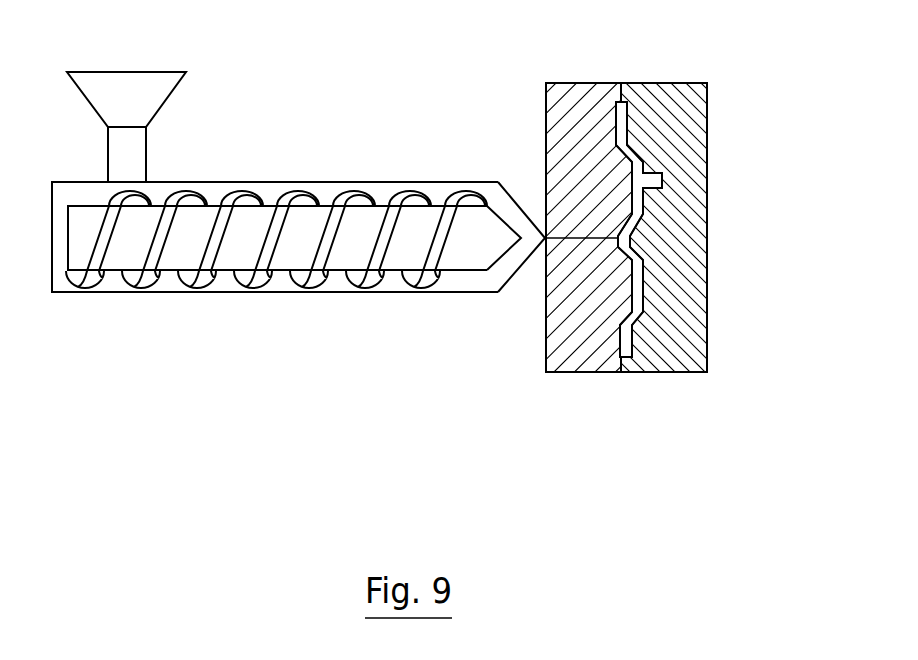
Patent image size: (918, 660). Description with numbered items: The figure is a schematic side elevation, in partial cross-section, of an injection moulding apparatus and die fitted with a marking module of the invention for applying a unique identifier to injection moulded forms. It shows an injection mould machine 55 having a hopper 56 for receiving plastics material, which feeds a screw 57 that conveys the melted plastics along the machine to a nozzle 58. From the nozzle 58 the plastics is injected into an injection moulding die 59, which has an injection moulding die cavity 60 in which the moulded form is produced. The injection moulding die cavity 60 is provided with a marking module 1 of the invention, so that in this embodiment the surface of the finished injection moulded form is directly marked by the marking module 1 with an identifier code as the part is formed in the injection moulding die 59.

The marking module 1 is at (662, 183).
The injection mould machine 55 is at (258, 322).
The hopper 56 is at (160, 82).
The screw 57 is at (353, 190).
The nozzle 58 is at (543, 253).
The injection moulding die 59 is at (705, 82).
The injection moulding die cavity 60 is at (633, 290).